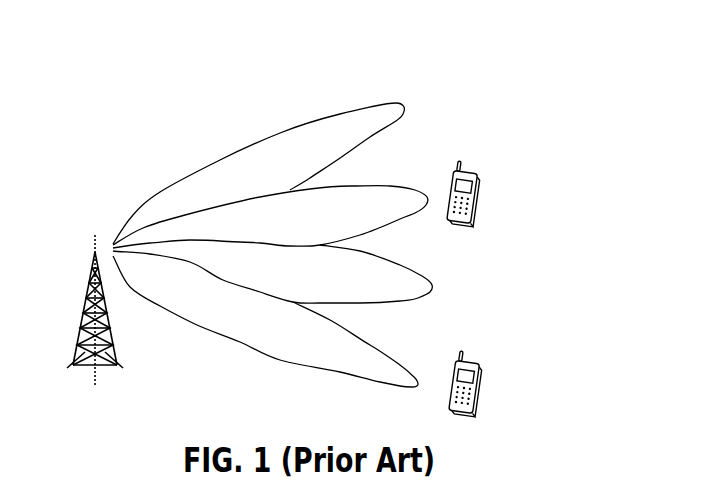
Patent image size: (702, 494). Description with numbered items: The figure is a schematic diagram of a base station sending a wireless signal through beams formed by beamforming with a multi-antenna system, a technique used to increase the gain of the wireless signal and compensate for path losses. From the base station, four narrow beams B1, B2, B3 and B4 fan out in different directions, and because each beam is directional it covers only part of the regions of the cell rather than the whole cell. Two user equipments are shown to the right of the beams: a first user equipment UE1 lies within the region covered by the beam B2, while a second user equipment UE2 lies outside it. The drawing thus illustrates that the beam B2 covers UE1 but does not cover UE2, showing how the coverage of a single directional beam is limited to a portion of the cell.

The beam B1 is at (258, 173).
The beam B2 is at (270, 217).
The beam B3 is at (272, 274).
The beam B4 is at (265, 321).
The user equipment UE1 is at (488, 194).
The user equipment UE2 is at (489, 384).